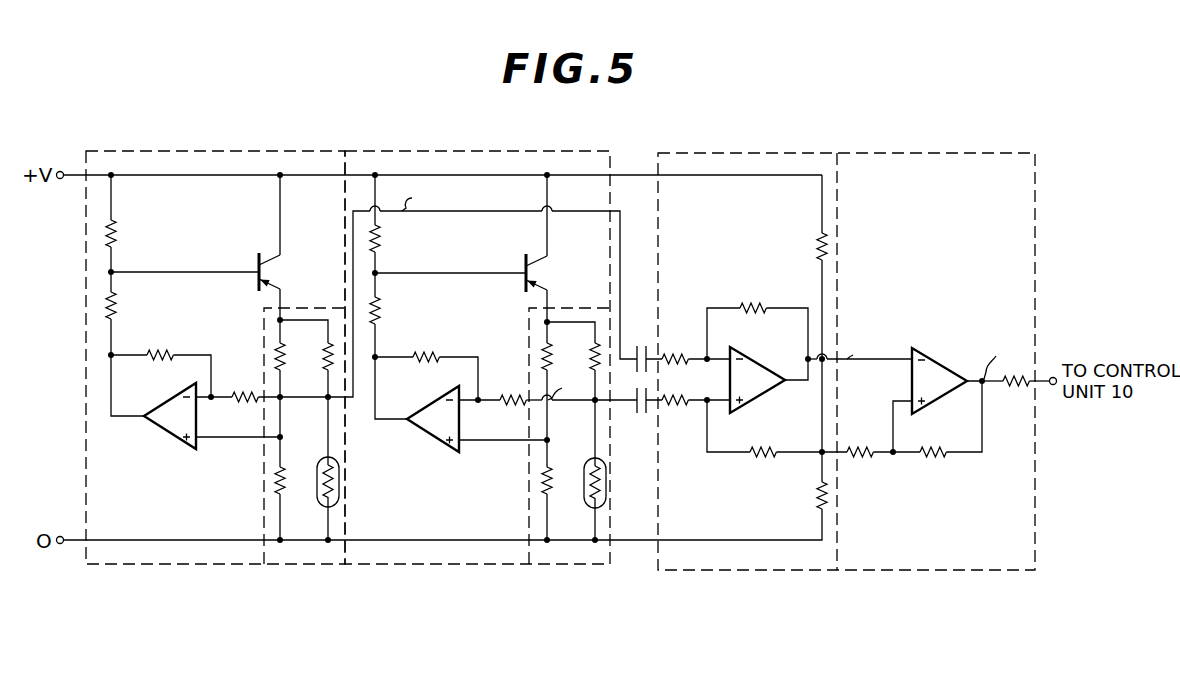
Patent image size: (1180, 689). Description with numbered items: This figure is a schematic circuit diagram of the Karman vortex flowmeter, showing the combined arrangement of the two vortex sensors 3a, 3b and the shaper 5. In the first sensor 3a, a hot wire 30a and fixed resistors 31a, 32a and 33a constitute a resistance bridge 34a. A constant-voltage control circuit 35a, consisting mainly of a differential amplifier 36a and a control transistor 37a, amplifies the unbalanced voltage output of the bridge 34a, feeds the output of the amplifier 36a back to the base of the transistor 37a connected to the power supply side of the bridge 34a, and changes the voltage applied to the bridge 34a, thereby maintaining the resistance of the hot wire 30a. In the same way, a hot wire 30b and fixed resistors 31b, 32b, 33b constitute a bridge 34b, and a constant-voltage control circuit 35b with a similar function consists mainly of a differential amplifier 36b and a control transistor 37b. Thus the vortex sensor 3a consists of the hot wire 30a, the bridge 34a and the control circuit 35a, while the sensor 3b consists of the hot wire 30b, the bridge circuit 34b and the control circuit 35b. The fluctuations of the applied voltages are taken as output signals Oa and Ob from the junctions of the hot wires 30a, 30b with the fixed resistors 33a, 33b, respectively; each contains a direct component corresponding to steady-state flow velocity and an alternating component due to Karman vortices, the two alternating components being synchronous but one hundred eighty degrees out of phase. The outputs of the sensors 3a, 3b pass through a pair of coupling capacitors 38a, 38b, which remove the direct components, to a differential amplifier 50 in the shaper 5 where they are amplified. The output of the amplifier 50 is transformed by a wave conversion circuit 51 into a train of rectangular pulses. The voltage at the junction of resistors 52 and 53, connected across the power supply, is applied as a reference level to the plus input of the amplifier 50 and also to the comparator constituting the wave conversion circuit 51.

The vortex sensor 3a is at (340, 612).
The vortex sensor 3b is at (605, 612).
The shaper 5 is at (943, 617).
The hot wire 30a is at (319, 490).
The hot wire 30b is at (587, 474).
The fixed resistor 31a is at (273, 359).
The fixed resistor 31b is at (547, 359).
The fixed resistor 32a is at (274, 478).
The fixed resistor 32b is at (541, 458).
The fixed resistor 33a is at (325, 364).
The fixed resistor 33b is at (592, 363).
The resistance bridge 34a is at (298, 564).
The bridge circuit 34b is at (575, 564).
The constant-voltage control circuit 35a is at (170, 564).
The constant-voltage control circuit 35b is at (443, 564).
The differential amplifier 36a is at (162, 430).
The differential amplifier 36b is at (424, 432).
The control transistor 37a is at (271, 281).
The control transistor 37b is at (540, 278).
The coupling capacitor 38a is at (641, 333).
The coupling capacitor 38b is at (644, 413).
The differential amplifier 50 is at (737, 570).
The wave conversion circuit 51 is at (937, 570).
The resistor 52 is at (815, 248).
The resistor 53 is at (811, 496).